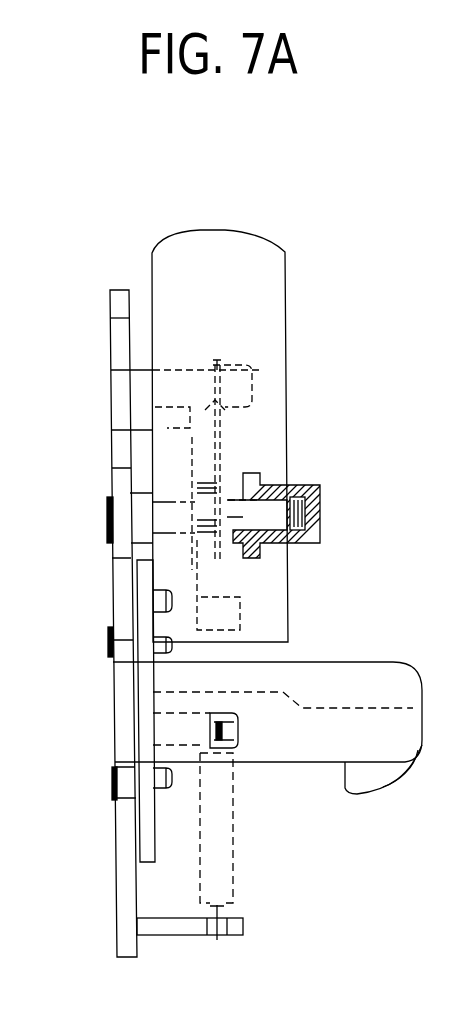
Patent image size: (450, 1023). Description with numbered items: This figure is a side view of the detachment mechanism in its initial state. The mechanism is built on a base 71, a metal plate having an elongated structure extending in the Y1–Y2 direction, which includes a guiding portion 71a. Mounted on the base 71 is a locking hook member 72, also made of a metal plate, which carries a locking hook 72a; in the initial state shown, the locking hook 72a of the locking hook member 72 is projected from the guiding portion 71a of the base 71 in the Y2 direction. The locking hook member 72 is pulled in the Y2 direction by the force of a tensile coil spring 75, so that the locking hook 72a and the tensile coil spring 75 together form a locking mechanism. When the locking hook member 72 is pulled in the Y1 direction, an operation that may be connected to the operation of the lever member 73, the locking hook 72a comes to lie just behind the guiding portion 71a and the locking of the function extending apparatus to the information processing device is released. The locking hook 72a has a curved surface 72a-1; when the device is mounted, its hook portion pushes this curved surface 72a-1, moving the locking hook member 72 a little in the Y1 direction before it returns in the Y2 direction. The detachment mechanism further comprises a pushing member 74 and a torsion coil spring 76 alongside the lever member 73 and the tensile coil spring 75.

The base 71 is at (120, 883).
The guiding portion 71a is at (397, 690).
The locking hook member 72 is at (148, 808).
The locking hook 72a is at (355, 795).
The curved surface 72a-1 is at (388, 783).
The lever member 73 is at (287, 370).
The pushing member 74 is at (323, 510).
The tensile coil spring 75 is at (230, 838).
The torsion coil spring 76 is at (220, 448).